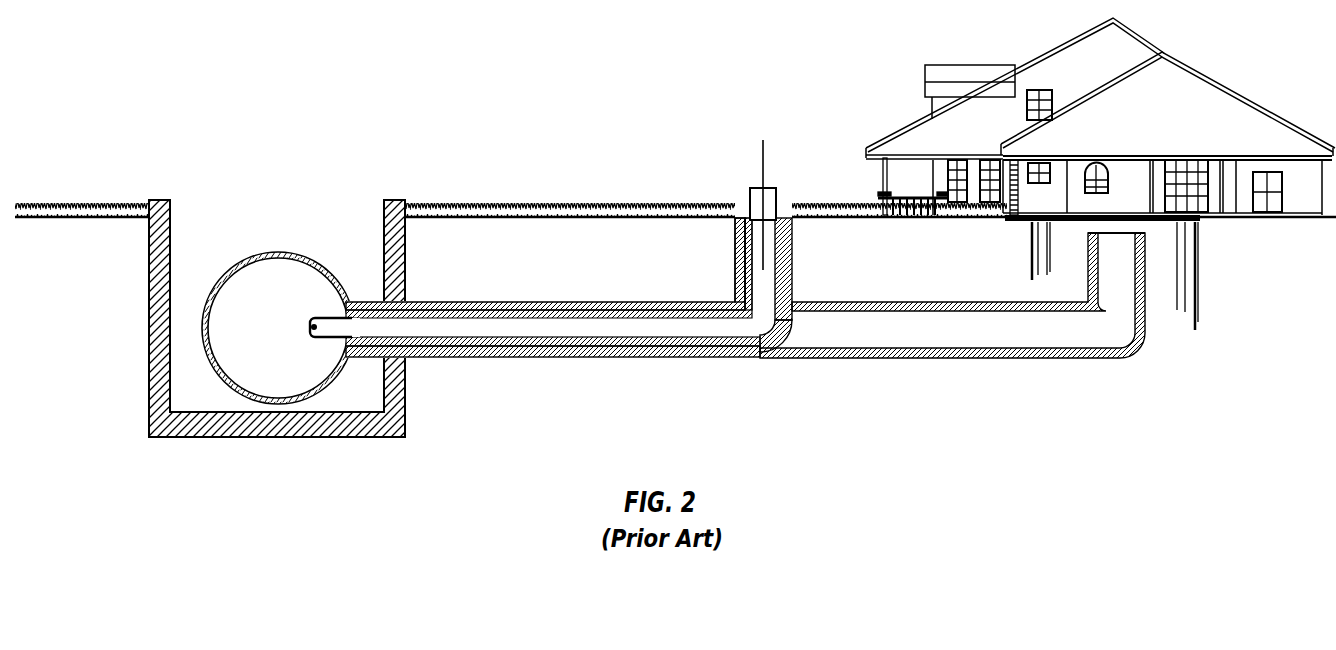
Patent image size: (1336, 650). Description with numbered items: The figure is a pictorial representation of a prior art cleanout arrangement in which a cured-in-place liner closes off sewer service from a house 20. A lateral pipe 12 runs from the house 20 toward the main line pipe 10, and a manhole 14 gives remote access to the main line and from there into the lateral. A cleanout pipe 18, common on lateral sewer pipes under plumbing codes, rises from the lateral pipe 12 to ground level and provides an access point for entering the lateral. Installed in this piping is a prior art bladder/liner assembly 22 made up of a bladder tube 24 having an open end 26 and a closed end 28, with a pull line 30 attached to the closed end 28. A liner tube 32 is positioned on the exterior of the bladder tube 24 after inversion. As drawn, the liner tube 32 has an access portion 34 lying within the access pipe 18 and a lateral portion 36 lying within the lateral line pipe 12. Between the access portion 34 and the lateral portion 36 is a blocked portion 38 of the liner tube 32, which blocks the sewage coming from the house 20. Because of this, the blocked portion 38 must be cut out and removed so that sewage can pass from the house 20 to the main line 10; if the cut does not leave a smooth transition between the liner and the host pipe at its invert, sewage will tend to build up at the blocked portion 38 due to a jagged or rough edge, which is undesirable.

The main line pipe 10 is at (252, 252).
The lateral pipe 12 is at (580, 305).
The manhole 14 is at (170, 224).
The cleanout pipe 18 is at (735, 283).
The house 20 is at (962, 40).
The bladder/liner assembly 22 is at (741, 193).
The bladder tube 24 is at (750, 192).
The open end 26 is at (776, 190).
The closed end 28 is at (312, 324).
The pull line 30 is at (495, 330).
The liner tube 32 is at (735, 217).
The access portion 34 is at (772, 268).
The lateral portion 36 is at (540, 318).
The blocked portion 38 is at (787, 316).